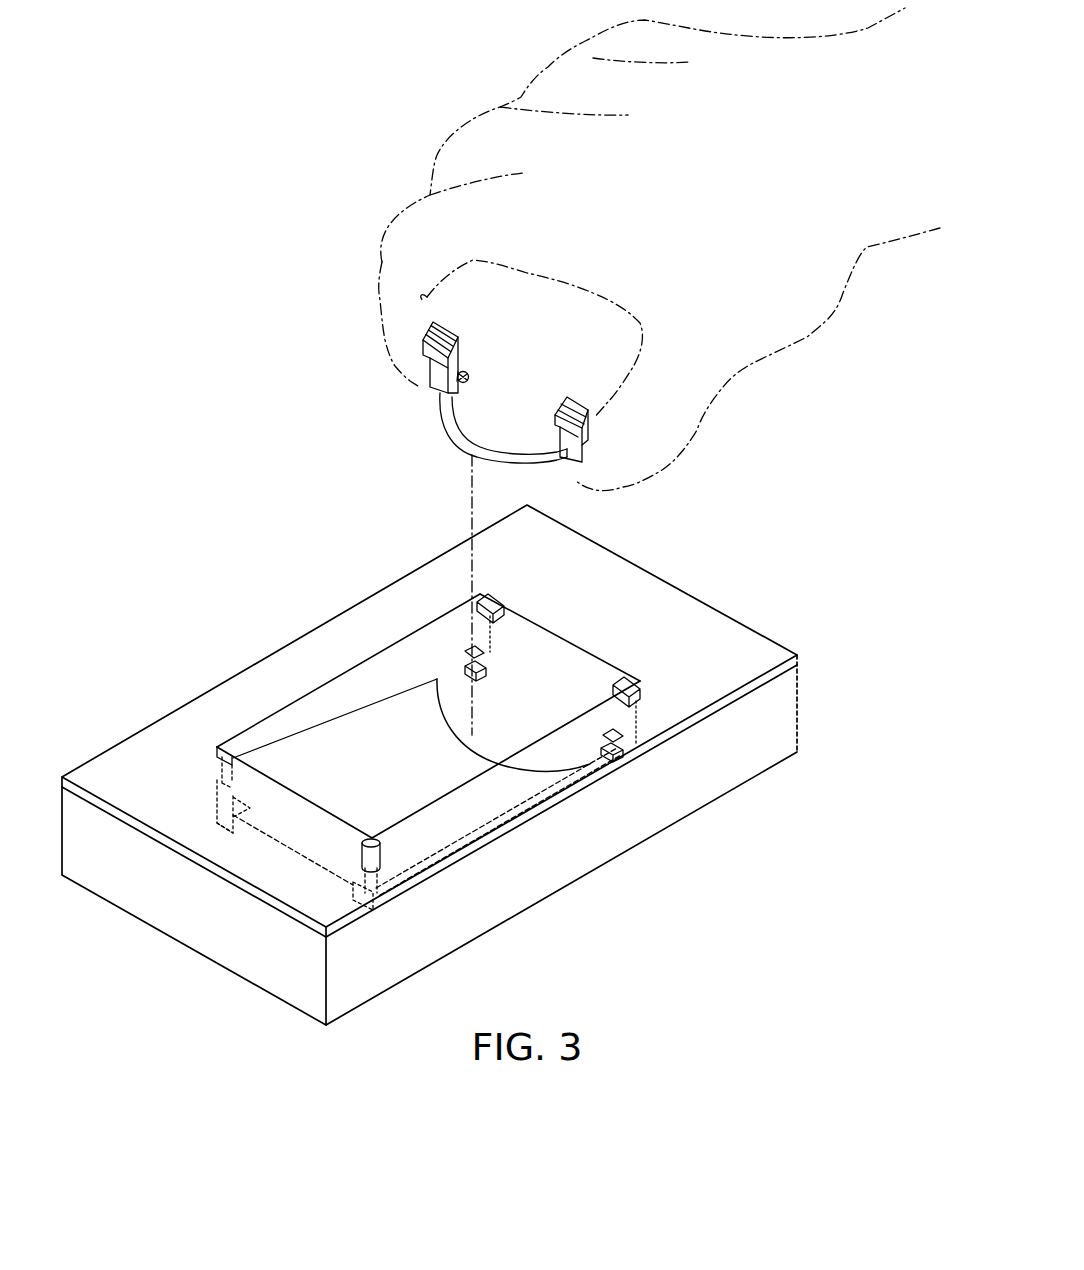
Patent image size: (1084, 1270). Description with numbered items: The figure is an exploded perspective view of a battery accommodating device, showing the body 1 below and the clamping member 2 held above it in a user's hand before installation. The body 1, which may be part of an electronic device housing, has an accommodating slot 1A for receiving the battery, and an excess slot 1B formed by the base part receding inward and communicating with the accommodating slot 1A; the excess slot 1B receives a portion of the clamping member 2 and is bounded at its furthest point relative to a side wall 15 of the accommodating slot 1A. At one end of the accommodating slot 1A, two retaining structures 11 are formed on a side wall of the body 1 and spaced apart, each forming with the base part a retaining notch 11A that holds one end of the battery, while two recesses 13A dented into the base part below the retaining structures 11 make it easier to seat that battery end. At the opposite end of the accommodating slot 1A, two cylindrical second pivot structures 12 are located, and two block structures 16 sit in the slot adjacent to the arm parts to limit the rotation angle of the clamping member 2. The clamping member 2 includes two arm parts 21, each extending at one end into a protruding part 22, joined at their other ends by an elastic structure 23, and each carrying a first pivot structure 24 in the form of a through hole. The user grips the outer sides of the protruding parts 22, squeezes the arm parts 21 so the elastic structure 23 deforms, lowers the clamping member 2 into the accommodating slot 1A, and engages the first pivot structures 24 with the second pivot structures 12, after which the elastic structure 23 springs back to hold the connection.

The body 1 is at (800, 725).
The accommodating slot 1A is at (352, 704).
The excess slot 1B is at (462, 689).
The clamping member 2 is at (469, 404).
The retaining structure 11 is at (225, 757).
The retaining notch 11A is at (215, 800).
The second pivot structure 12 is at (480, 655).
The recess 13A is at (228, 823).
The side wall 15 is at (575, 667).
The block structure 16 is at (490, 598).
The arm part 21 is at (438, 370).
The protruding part 22 is at (458, 348).
The elastic structure 23 is at (461, 445).
The first pivot structure 24 is at (470, 378).